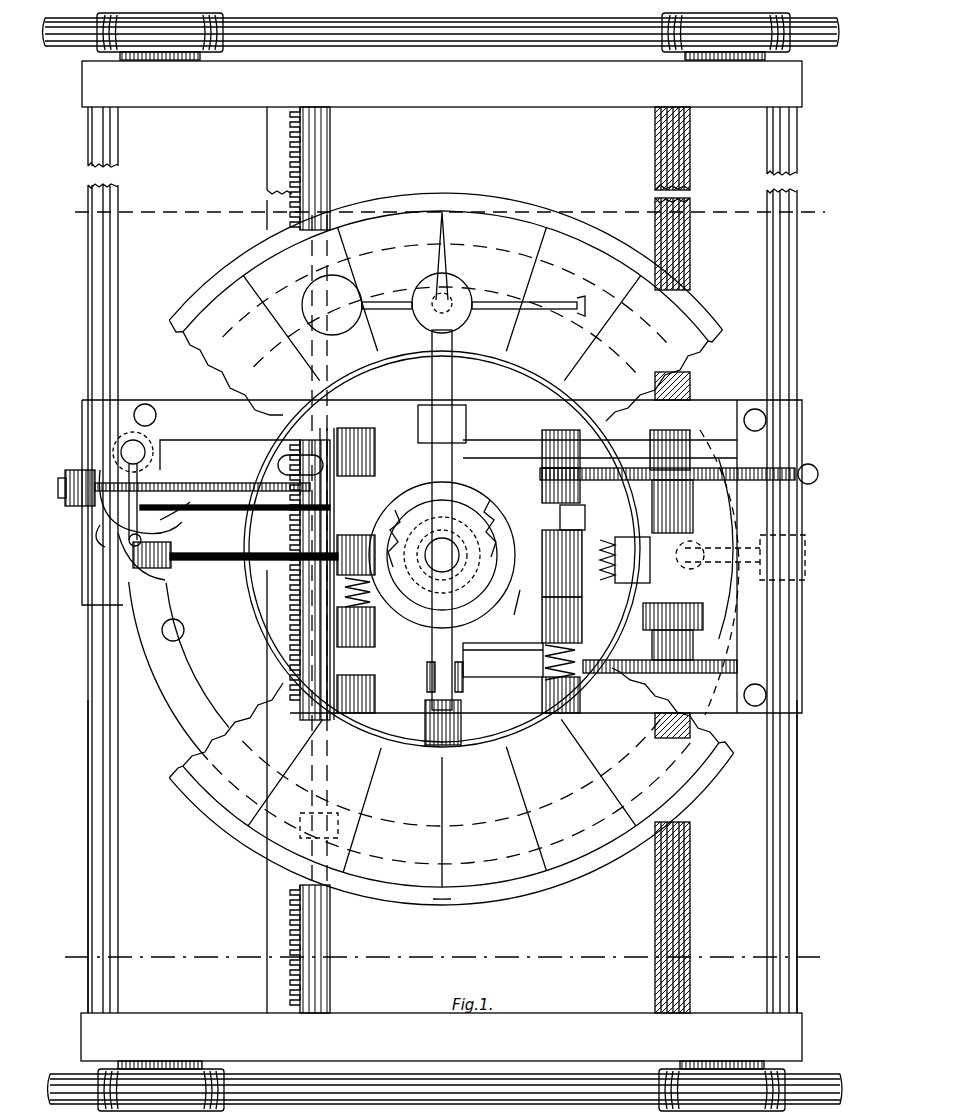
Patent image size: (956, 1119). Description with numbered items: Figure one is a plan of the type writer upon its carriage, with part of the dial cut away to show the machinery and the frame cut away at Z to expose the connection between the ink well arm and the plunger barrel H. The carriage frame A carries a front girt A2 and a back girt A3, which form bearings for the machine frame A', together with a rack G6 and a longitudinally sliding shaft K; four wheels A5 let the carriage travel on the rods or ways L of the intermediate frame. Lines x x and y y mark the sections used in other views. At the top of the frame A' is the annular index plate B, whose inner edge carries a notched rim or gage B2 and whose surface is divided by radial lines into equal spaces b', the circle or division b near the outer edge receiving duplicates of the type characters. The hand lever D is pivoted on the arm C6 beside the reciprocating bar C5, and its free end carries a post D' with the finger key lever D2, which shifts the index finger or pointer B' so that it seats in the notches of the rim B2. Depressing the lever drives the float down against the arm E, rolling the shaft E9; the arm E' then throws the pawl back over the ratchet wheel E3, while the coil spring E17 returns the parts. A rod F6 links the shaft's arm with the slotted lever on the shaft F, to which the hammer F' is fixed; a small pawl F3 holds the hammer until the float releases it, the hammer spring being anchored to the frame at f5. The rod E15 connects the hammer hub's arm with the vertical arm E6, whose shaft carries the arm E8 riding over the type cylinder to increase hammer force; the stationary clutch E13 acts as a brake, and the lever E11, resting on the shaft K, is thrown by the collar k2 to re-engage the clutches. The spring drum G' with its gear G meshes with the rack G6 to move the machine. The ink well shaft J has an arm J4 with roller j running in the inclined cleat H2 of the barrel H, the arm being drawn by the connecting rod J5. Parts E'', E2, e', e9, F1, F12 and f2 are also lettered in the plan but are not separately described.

The carriage frame A is at (442, 562).
The machine frame A' is at (442, 556).
The front girt A2 is at (797, 791).
The back girt A3 is at (115, 800).
The wheels A5 is at (812, 1068).
The index plate B is at (451, 549).
The index finger or pointer B' is at (450, 256).
The rim or gage B2 is at (357, 305).
The sector rim b is at (442, 907).
The equal spaces b' is at (451, 554).
The reciprocating bar C5 is at (370, 575).
The arm C6 is at (461, 726).
The hand lever D is at (446, 491).
The post D' is at (442, 555).
The finger key lever D2 is at (528, 315).
The arm E is at (575, 478).
The arm E' is at (572, 586).
The feed gear E'' is at (657, 487).
The gear E2 is at (700, 641).
The ratchet wheel E3 is at (668, 672).
The vertical arm E6 is at (655, 463).
The arm E8 is at (751, 557).
The shaft E9 is at (560, 520).
The lever E11 is at (806, 464).
The stationary clutch E13 is at (625, 560).
The rod E15 is at (503, 660).
The coil spring E17 is at (692, 475).
The pin e' is at (514, 611).
The spring e9 is at (550, 679).
The shaft F is at (202, 471).
The hammer F' is at (200, 512).
The shaft F1 is at (335, 586).
The pawl F3 is at (318, 527).
The rod F6 is at (466, 448).
The slot F12 is at (300, 465).
The spring f2 is at (347, 582).
The spring attachment point f5 is at (75, 491).
The gear wheel G is at (442, 549).
The drum G' is at (368, 683).
The rack G6 is at (270, 632).
The plunger barrel H is at (138, 563).
The inclined cleat H2 is at (185, 520).
The ink well shaft J is at (120, 450).
The arm J4 is at (126, 518).
The connecting rod J5 is at (254, 545).
The antifriction roller j is at (128, 548).
The sliding shaft K is at (322, 940).
The collar k2 is at (336, 821).
The rods or ways L is at (500, 45).
The cut-away location Z is at (100, 530).
The section line x x is at (448, 212).
The section line y y is at (444, 958).